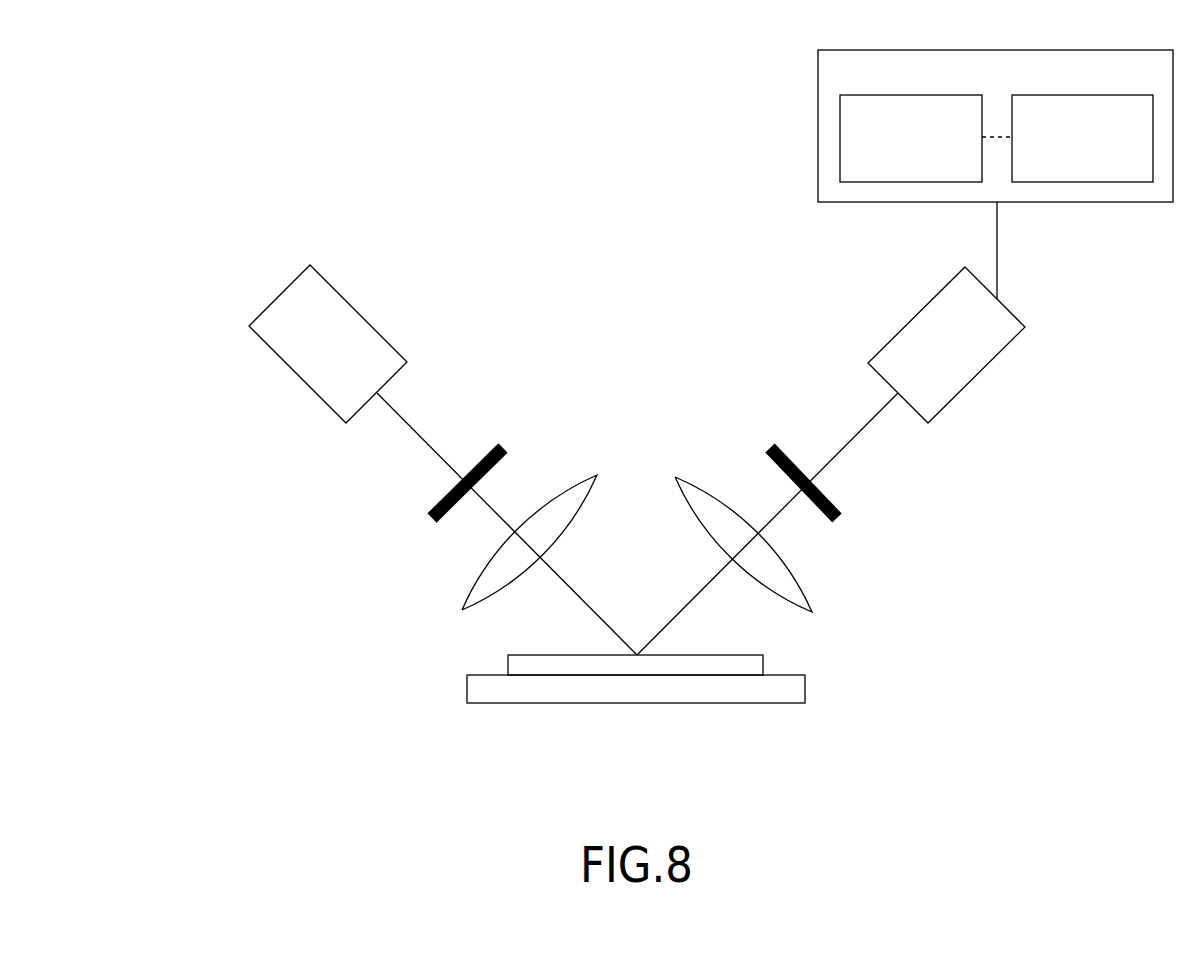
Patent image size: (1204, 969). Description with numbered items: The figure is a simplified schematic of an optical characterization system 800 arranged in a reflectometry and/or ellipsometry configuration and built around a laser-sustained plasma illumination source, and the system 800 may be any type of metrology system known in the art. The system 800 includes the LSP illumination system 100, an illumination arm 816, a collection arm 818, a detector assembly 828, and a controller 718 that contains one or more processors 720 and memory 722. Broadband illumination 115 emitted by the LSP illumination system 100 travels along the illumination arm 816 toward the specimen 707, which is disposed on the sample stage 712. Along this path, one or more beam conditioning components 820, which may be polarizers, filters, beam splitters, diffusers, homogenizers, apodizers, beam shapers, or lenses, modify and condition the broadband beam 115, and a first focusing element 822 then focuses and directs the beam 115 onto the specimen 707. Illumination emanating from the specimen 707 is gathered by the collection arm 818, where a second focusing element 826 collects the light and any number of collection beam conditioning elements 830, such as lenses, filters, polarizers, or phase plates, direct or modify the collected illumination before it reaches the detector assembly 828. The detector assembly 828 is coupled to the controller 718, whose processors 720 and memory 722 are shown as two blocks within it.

The optical characterization system 800 is at (273, 87).
The LSP illumination system 100 is at (349, 355).
The broadband illumination 115 is at (418, 433).
The illumination arm 816 is at (328, 478).
The collection arm 818 is at (943, 478).
The beam conditioning components 820 is at (437, 508).
The first focusing element 822 is at (468, 590).
The second focusing element 826 is at (802, 590).
The collection beam conditioning elements 830 is at (835, 505).
The detector assembly 828 is at (971, 357).
The specimen 707 is at (763, 662).
The sample stage 712 is at (805, 685).
The controller 718 is at (1019, 83).
The processors 720 is at (932, 149).
The memory 722 is at (1104, 149).